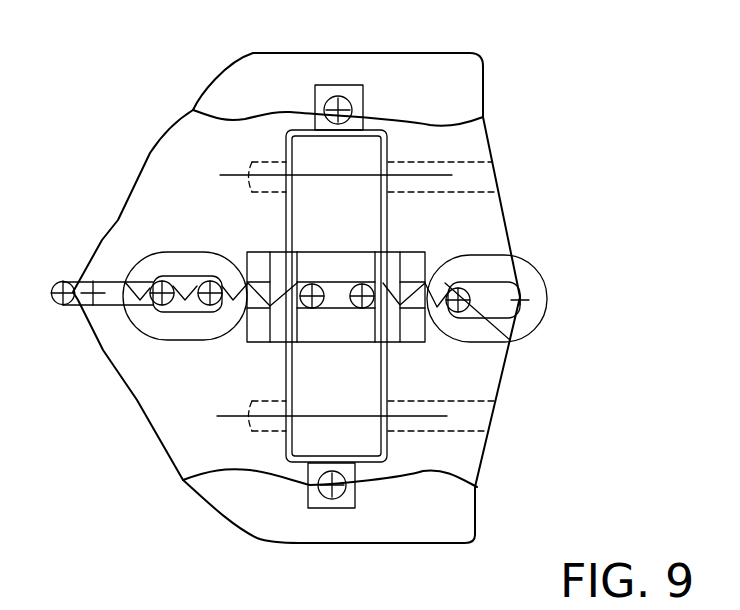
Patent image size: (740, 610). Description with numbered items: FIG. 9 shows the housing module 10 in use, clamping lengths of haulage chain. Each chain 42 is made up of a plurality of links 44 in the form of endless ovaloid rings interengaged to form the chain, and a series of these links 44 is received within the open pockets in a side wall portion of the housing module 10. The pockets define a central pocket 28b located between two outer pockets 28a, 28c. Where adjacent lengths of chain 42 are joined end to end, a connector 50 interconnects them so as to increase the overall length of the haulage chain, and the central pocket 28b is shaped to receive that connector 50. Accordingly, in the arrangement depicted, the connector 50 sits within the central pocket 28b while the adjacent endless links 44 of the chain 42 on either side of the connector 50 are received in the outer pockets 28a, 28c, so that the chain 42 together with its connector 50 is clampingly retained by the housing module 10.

The housing module 10 is at (530, 115).
The outer pocket 28a is at (170, 252).
The central pocket 28b is at (327, 257).
The outer pocket 28c is at (463, 343).
The chain 42 is at (545, 337).
The link 44 is at (183, 327).
The connector 50 is at (326, 316).